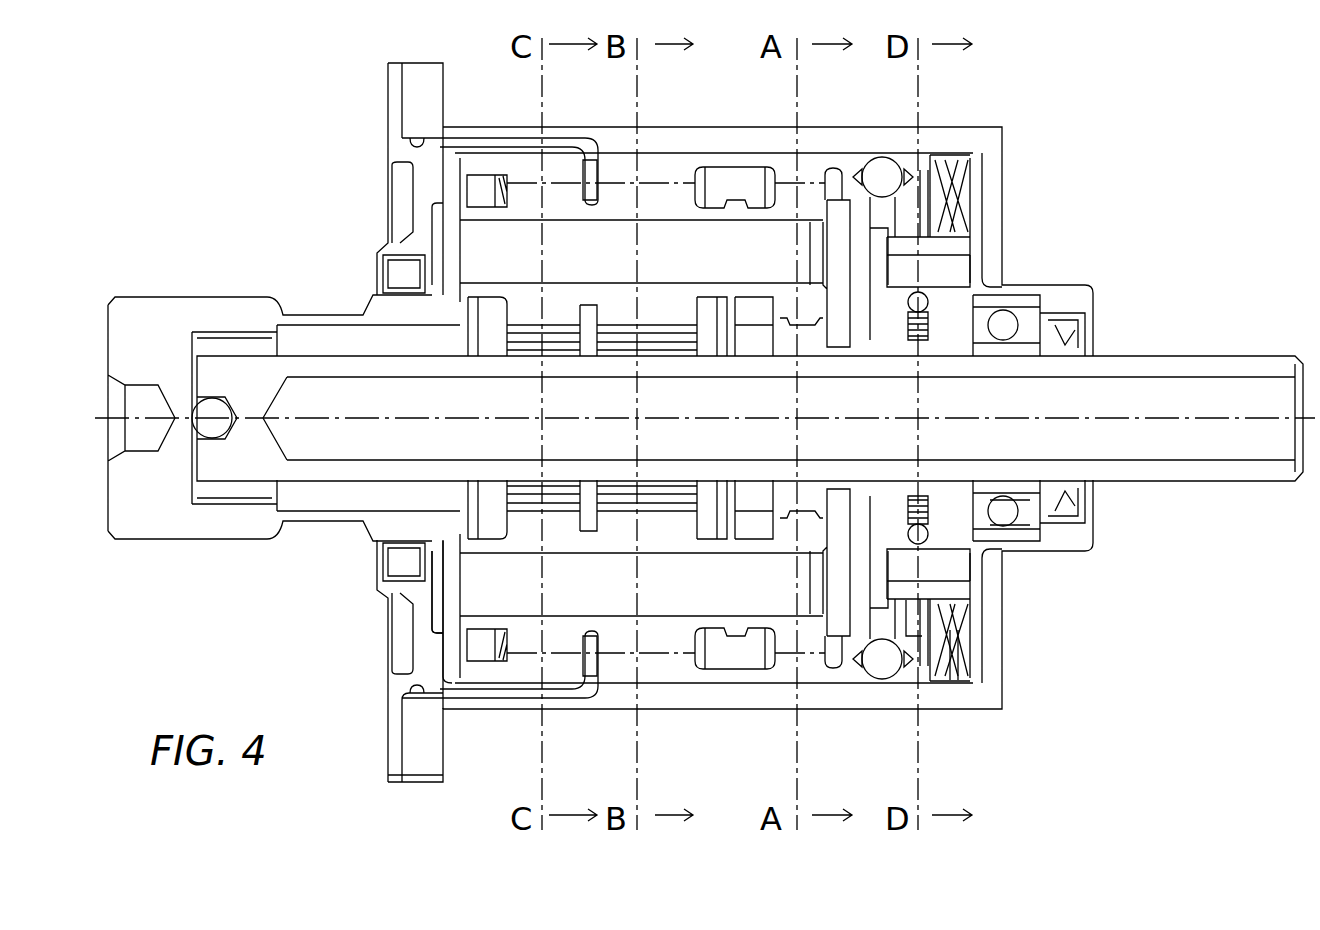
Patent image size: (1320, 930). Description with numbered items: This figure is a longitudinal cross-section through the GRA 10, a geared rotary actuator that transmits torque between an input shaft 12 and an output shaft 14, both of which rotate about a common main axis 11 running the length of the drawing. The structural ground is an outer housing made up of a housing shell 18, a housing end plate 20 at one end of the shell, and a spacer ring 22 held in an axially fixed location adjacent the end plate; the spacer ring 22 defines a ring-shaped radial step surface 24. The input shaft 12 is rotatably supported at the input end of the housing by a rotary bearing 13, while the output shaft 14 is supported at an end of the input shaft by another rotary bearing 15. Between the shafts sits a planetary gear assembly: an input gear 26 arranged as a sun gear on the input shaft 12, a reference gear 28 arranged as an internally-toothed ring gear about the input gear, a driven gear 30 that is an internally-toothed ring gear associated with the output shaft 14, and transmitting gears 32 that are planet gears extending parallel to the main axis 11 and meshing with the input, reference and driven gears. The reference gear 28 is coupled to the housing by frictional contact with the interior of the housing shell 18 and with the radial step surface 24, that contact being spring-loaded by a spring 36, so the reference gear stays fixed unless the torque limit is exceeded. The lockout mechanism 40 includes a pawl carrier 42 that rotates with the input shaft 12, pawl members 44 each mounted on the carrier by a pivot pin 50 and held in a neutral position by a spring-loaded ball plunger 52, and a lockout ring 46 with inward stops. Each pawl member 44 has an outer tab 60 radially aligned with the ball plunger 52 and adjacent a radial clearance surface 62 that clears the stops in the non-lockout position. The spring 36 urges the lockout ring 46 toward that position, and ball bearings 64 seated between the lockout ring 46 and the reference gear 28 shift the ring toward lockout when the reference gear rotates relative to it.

The GRA 10 is at (1102, 136).
The main axis 11 is at (558, 417).
The input shaft 12 is at (1227, 357).
The rotary bearing 13 is at (1020, 533).
The output shaft 14 is at (186, 297).
The rotary bearing 15 is at (232, 490).
The housing shell 18 is at (793, 130).
The housing end plate 20 is at (388, 130).
The spacer ring 22 is at (525, 140).
The radial step surface 24 is at (598, 160).
The input gear 26 is at (802, 503).
The reference gear 28 is at (787, 672).
The driven gear 30 is at (520, 657).
The transmitting gear 32 is at (654, 192).
The spring 36 is at (958, 648).
The lockout mechanism 40 is at (965, 208).
The pawl carrier 42 is at (948, 323).
The pawl member 44 is at (940, 242).
The lockout ring 46 is at (910, 620).
The pivot pin 50 is at (945, 265).
The ball plunger 52 is at (915, 322).
The outer tab 60 is at (945, 236).
The radial clearance surface 62 is at (902, 237).
The ball bearing 64 is at (885, 677).